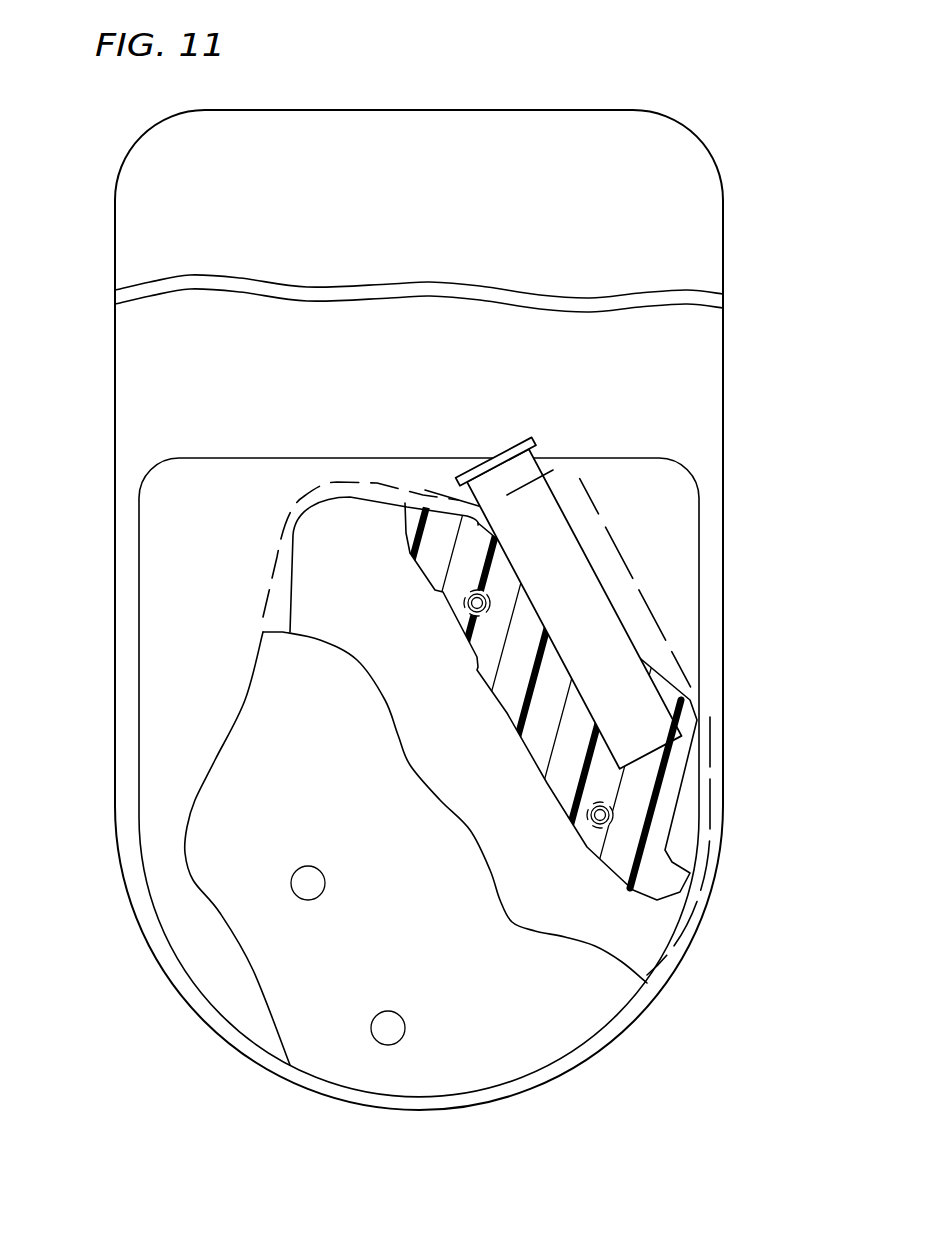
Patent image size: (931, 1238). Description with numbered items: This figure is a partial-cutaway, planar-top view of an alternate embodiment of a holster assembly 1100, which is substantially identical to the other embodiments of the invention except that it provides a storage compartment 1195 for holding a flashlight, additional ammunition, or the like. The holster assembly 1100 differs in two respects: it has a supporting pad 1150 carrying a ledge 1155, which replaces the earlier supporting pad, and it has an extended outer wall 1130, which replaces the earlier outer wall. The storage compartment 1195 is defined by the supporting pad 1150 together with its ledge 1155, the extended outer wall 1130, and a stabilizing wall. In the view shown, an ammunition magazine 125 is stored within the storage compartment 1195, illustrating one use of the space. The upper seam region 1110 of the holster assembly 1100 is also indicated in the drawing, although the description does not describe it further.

The holster assembly 1100 is at (483, 98).
The flexible seam region 1110 is at (118, 255).
The extended outer wall 1130 is at (275, 685).
The supporting pad 1150 is at (507, 712).
The ledge 1155 is at (690, 714).
The storage compartment 1195 is at (540, 706).
The ammunition magazine 125 is at (608, 634).